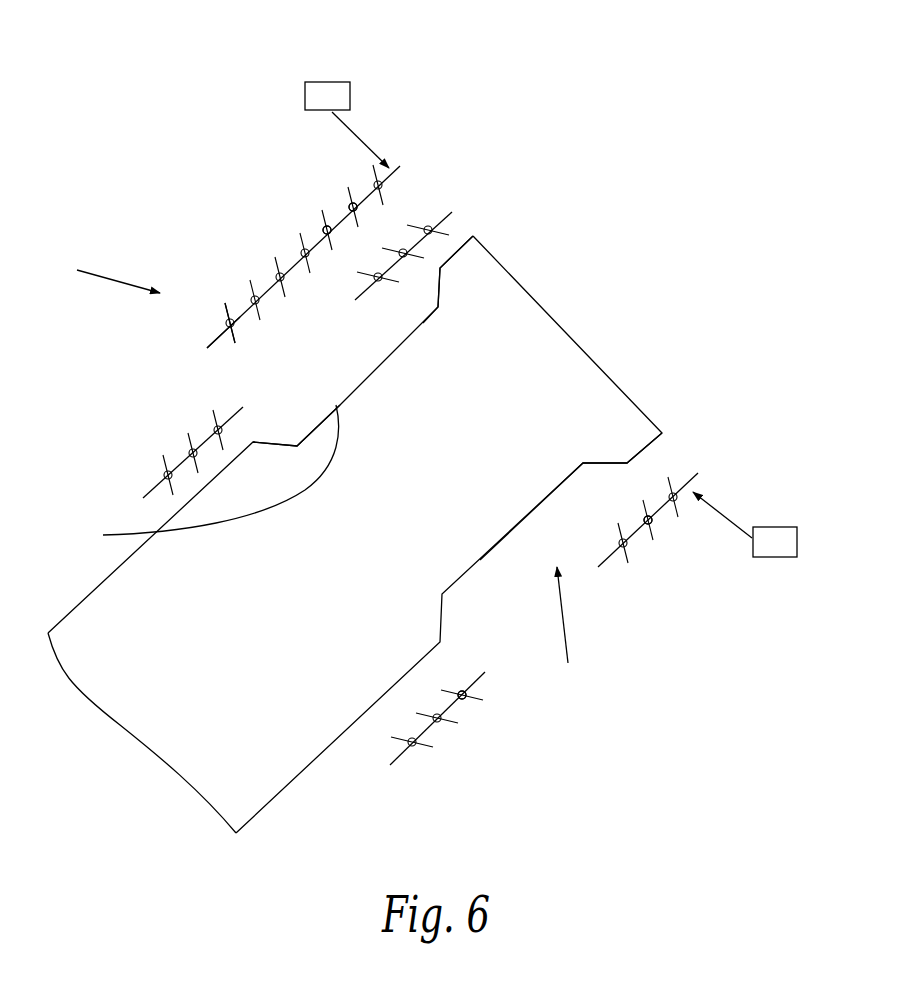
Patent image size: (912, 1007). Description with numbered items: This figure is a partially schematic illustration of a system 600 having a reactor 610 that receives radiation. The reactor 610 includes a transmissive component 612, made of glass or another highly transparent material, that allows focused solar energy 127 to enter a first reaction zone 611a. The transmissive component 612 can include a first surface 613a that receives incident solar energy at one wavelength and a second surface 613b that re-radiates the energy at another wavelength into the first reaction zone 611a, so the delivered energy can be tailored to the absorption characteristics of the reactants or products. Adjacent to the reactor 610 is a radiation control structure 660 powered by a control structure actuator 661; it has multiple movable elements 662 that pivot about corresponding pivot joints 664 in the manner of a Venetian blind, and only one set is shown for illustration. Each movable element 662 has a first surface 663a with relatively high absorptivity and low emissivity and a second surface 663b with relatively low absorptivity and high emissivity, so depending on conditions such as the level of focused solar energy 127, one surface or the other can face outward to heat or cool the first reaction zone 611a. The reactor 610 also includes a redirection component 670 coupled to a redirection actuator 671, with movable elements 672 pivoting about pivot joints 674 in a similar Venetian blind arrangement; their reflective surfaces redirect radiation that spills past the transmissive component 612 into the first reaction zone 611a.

The system 600 is at (163, 152).
The reactor 610 is at (285, 788).
The transmissive component 612 is at (420, 317).
The first reaction zone 611a is at (508, 477).
The first surface 613a is at (337, 403).
The second surface 613b is at (193, 479).
The radiation control structure 660 is at (392, 143).
The control structure actuator 661 is at (330, 80).
The movable elements 662 is at (349, 197).
The first surface 663a is at (225, 308).
The second surface 663b is at (238, 335).
The pivot joints 664 is at (318, 232).
The redirection component 670 is at (450, 190).
The redirection actuator 671 is at (782, 527).
The movable elements 672 is at (462, 705).
The pivot joints 674 is at (648, 542).
The focused solar energy 127 is at (102, 278).